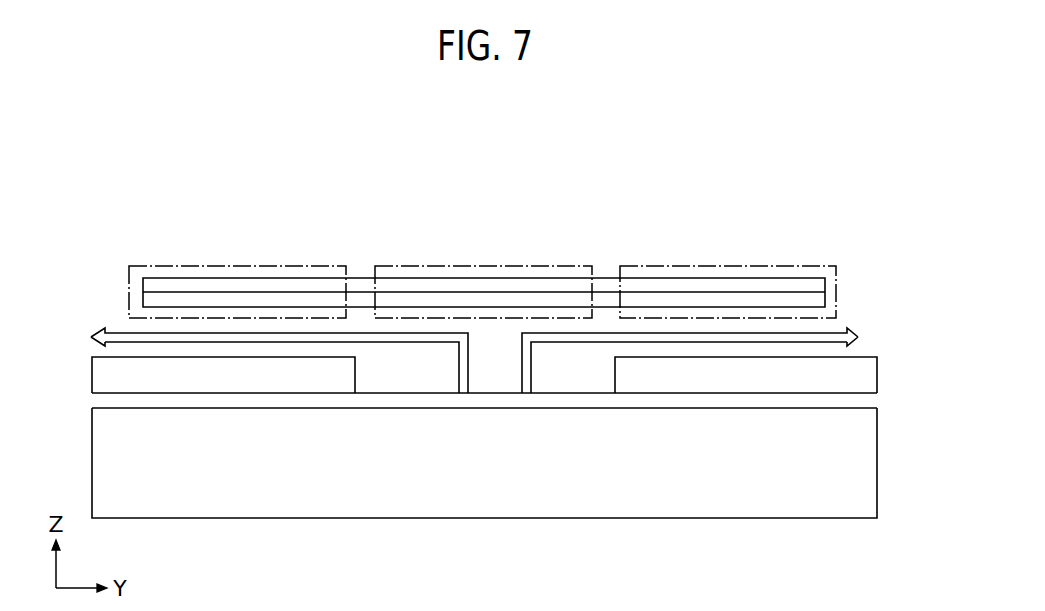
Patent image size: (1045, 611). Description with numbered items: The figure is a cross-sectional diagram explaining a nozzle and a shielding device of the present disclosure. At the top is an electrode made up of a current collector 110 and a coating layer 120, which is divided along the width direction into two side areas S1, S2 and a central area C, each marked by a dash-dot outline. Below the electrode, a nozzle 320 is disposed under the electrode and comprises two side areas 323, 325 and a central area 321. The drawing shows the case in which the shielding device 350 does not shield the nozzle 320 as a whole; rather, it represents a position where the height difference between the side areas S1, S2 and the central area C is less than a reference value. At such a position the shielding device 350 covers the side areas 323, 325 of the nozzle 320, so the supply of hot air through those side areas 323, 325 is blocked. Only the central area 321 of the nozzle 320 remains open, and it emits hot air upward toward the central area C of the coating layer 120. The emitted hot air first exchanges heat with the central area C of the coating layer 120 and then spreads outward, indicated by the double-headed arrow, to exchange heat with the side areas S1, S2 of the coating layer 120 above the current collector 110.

The current collector 110 is at (826, 303).
The coating layer 120 is at (826, 283).
The nozzle 320 is at (880, 453).
The central area 321 is at (503, 409).
The side area 323 is at (242, 409).
The side area 325 is at (763, 409).
The shielding device 350 is at (92, 368).
The side area S1 is at (239, 261).
The side area S2 is at (729, 261).
The central area C is at (485, 261).